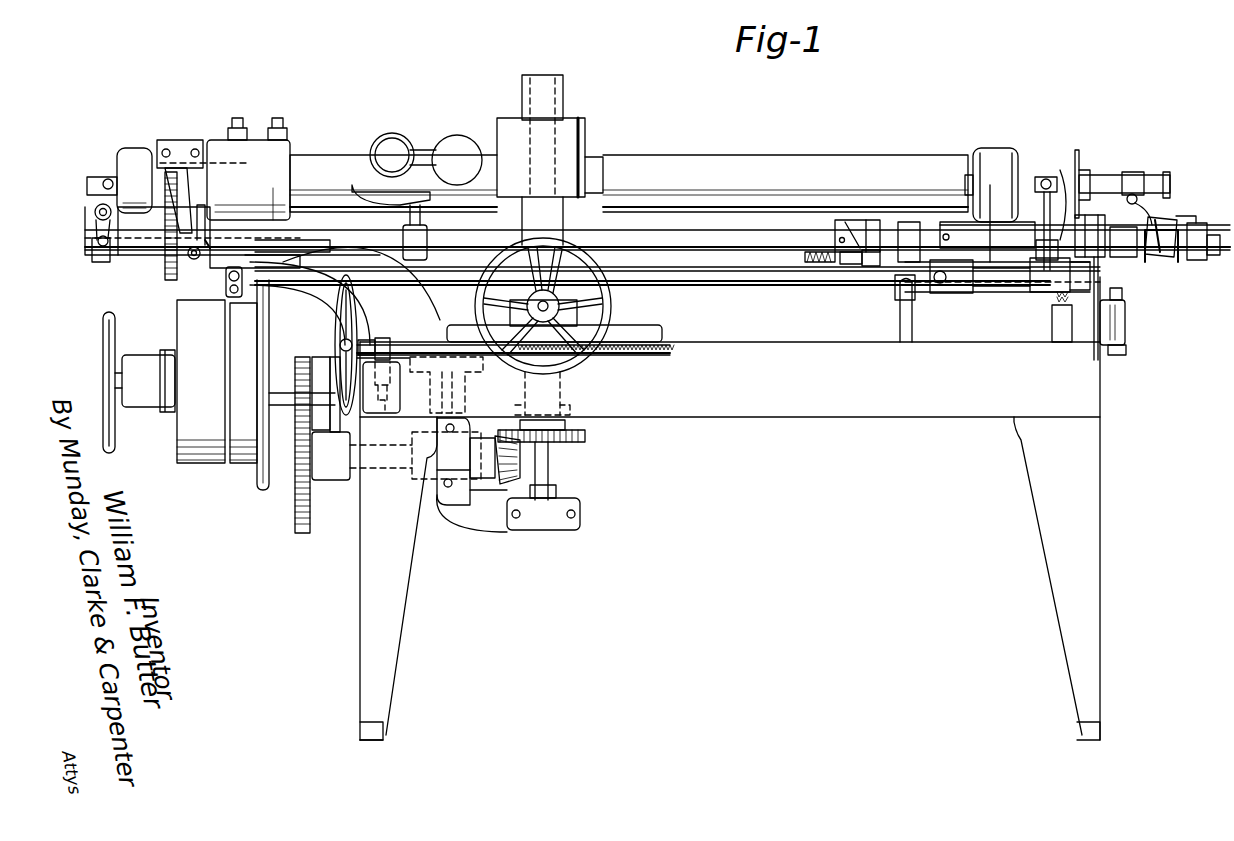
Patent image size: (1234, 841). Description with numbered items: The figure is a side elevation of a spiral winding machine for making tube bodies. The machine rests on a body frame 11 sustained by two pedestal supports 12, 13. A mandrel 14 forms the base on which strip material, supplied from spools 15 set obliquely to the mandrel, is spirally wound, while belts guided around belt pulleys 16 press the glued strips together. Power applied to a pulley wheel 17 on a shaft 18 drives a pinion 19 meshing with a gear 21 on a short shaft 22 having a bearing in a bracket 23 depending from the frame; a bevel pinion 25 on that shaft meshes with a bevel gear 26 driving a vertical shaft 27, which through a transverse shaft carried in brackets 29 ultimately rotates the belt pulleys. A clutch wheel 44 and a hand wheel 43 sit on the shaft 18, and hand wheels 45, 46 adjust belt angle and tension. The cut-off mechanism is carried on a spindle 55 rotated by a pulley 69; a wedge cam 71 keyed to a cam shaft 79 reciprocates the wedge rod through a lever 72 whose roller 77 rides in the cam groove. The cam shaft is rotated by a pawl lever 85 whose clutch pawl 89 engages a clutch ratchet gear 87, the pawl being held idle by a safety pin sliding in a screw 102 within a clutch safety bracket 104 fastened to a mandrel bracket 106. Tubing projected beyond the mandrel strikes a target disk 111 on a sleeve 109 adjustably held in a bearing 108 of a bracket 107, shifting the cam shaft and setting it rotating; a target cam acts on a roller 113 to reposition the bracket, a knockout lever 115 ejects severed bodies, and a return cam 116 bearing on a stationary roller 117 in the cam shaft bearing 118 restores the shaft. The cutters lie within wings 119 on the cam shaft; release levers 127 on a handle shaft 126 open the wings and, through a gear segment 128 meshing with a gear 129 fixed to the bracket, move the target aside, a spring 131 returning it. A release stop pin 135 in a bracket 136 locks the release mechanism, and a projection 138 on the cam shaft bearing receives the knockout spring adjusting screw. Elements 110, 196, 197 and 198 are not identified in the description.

The body frame 11 is at (772, 415).
The pedestal support 12 is at (405, 636).
The pedestal support 13 is at (1050, 602).
The mandrel 14 is at (700, 163).
The spools 15 is at (392, 145).
The belt pulleys 16 is at (512, 122).
The pulley wheel 17 is at (180, 450).
The shaft 18 is at (285, 398).
The pinion 19 is at (296, 358).
The gear 21 is at (294, 527).
The short shaft 22 is at (356, 475).
The bracket 23 is at (335, 475).
The bevel pinion 25 is at (520, 460).
The bevel gear 26 is at (586, 435).
The vertical shaft 27 is at (549, 480).
The brackets 29 is at (448, 490).
The hand wheel 43 is at (115, 428).
The clutch wheel 44 is at (258, 484).
The hand wheel 45 is at (338, 312).
The hand wheel 46 is at (612, 306).
The spindle 55 is at (196, 140).
The pulley 69 is at (127, 150).
The wedge cam 71 is at (86, 245).
The lever 72 is at (94, 205).
The roller 77 is at (103, 256).
The cam shaft 79 is at (686, 242).
The pawl lever 85 is at (206, 250).
The clutch ratchet gear 87 is at (194, 259).
The clutch pawl 89 is at (165, 278).
The screw 102 is at (1054, 296).
The clutch safety bracket 104 is at (220, 170).
The mandrel bracket 106 is at (214, 140).
The bracket 107 is at (1200, 225).
The bearing 108 is at (1140, 178).
The sleeve 109 is at (1117, 168).
The block 110 is at (1058, 184).
The target disk 111 is at (1080, 166).
The roller 113 is at (1163, 222).
The knockout lever 115 is at (1044, 216).
The return cam 116 is at (836, 228).
The roller 117 is at (870, 267).
The cam shaft bearing 118 is at (899, 300).
The wings 119 is at (1000, 156).
The handle shaft 126 is at (712, 275).
The release levers 127 is at (226, 285).
The gear segment 128 is at (1130, 258).
The gear 129 is at (1110, 220).
The spring 131 is at (1216, 254).
The release stop pin 135 is at (1126, 316).
The bracket 136 is at (1127, 340).
The projection 138 is at (1051, 320).
The block 196 is at (1010, 290).
The stop 197 is at (852, 264).
The spring 198 is at (812, 263).